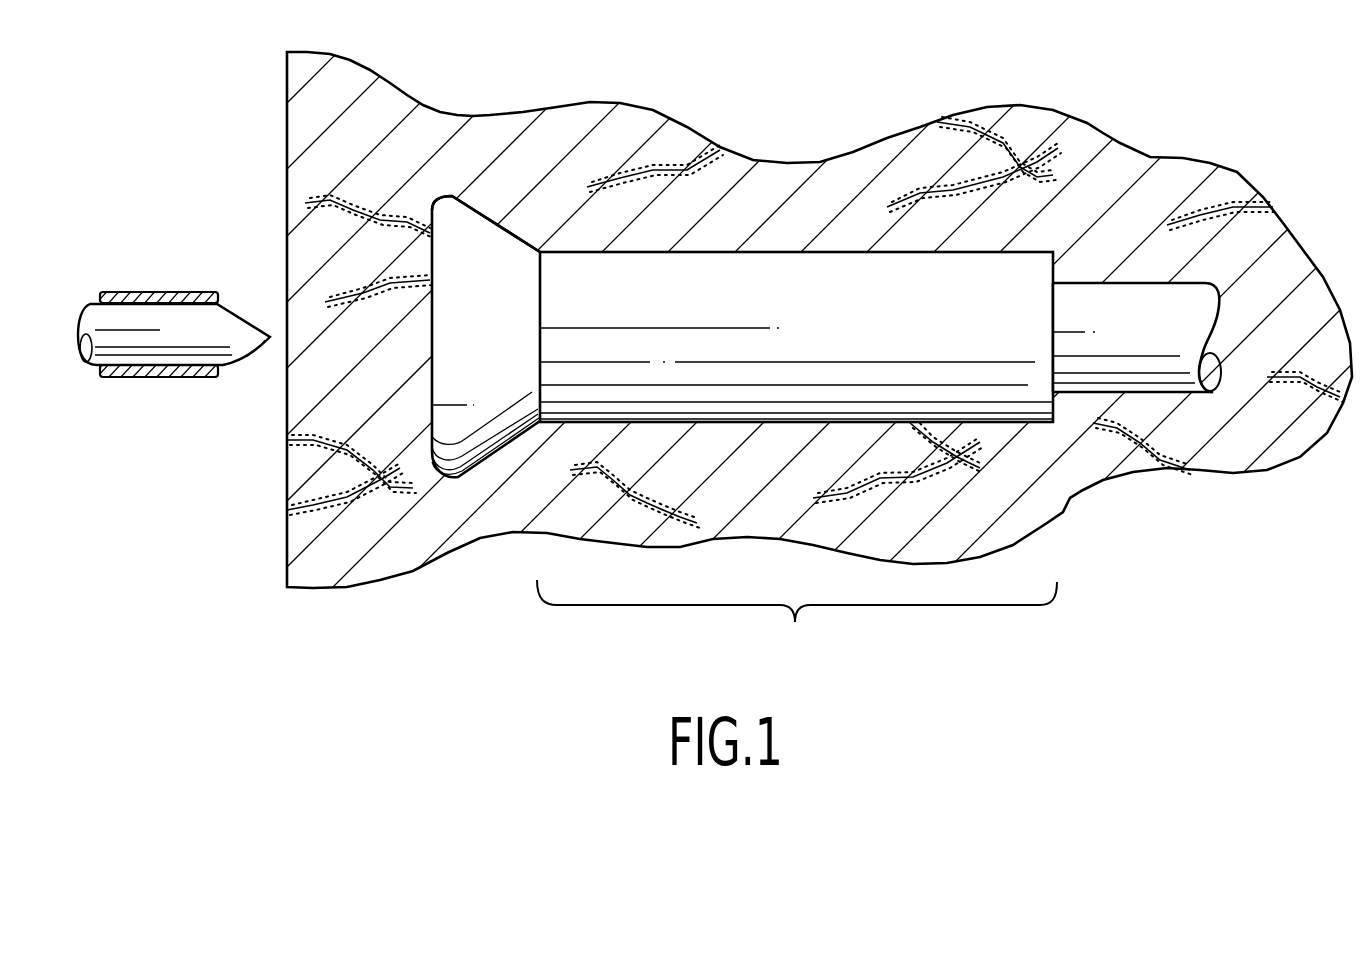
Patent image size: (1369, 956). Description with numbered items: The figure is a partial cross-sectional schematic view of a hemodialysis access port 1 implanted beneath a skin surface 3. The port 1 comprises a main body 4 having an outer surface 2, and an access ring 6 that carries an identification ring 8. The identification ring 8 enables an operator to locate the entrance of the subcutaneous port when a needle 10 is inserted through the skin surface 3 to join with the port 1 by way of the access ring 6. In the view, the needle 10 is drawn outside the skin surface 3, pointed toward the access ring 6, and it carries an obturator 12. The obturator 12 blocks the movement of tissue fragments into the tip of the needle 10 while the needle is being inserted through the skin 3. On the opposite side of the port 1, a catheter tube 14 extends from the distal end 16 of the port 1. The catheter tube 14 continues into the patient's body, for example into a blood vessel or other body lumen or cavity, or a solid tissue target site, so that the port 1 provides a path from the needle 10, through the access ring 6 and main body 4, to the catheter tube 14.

The hemodialysis access port 1 is at (827, 194).
The outer surface 2 is at (777, 254).
The skin surface 3 is at (287, 93).
The main body 4 is at (797, 623).
The access ring 6 is at (476, 293).
The identification ring 8 is at (445, 197).
The needle 10 is at (156, 378).
The obturator 12 is at (233, 324).
The catheter tube 14 is at (1138, 333).
The distal end 16 is at (1057, 267).